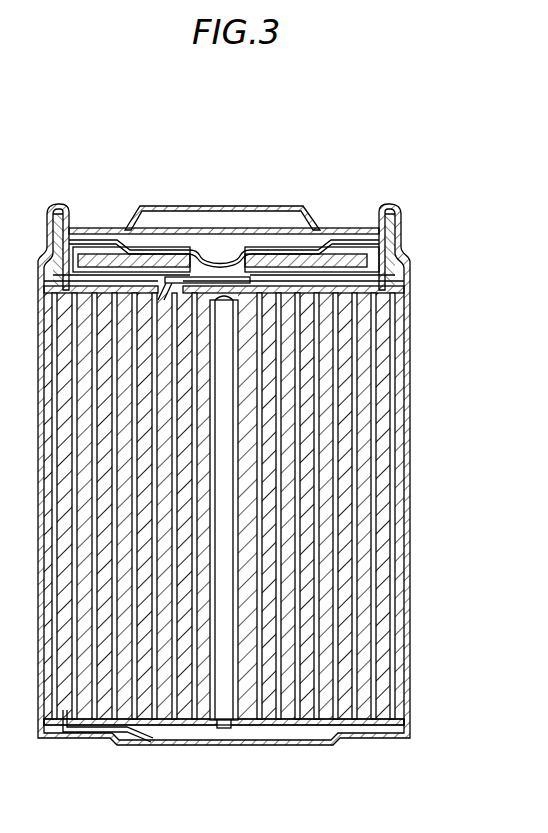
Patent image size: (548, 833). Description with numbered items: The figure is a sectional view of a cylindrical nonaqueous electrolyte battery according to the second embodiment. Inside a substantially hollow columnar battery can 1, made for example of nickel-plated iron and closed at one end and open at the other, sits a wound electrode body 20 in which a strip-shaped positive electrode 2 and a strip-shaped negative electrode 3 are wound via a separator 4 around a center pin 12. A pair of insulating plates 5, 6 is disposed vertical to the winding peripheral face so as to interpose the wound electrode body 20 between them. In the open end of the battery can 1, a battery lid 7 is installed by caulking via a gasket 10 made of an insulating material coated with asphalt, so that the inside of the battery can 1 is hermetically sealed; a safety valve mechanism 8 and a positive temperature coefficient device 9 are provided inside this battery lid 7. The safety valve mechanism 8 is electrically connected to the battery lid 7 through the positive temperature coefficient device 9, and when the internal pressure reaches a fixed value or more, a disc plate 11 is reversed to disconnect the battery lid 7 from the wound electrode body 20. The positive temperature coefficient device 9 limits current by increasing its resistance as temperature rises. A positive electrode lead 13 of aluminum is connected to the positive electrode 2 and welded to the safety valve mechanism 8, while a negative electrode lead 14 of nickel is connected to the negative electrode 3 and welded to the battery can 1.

The battery can 1 is at (411, 338).
The positive electrode 2 is at (365, 456).
The negative electrode 3 is at (373, 488).
The separator 4 is at (370, 516).
The insulating plate 5 is at (399, 290).
The insulating plate 6 is at (398, 722).
The battery lid 7 is at (215, 205).
The safety valve mechanism 8 is at (293, 238).
The positive temperature coefficient device 9 is at (408, 233).
The gasket 10 is at (403, 270).
The disc plate 11 is at (271, 246).
The center pin 12 is at (226, 556).
The positive electrode lead 13 is at (205, 262).
The negative electrode lead 14 is at (137, 741).
The wound electrode body 20 is at (253, 507).